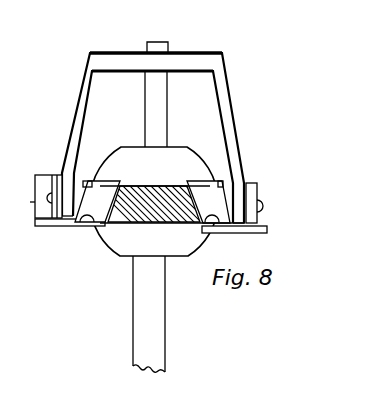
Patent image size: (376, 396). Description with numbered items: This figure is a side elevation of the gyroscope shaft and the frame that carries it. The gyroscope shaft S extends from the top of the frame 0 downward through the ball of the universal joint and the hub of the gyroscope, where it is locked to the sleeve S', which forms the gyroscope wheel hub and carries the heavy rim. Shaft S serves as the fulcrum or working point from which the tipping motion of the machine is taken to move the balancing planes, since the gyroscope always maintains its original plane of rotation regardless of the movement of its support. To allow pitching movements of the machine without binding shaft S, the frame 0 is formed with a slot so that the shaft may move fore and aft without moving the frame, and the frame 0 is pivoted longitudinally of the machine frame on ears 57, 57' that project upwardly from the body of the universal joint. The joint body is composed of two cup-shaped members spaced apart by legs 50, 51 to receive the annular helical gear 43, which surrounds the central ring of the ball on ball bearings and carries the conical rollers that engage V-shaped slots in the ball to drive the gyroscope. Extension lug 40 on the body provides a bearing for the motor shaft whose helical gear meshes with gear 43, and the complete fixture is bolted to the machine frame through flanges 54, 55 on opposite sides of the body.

The frame 0 is at (230, 116).
The gyroscope shaft S is at (171, 94).
The sleeve S' is at (163, 314).
The extension lug 40 is at (46, 175).
The ear 57 is at (58, 174).
The ear 57' is at (265, 189).
The flange 54 is at (72, 225).
The flange 55 is at (241, 230).
The leg 50 is at (97, 201).
The leg 51 is at (208, 202).
The annular helical gear 43 is at (164, 206).